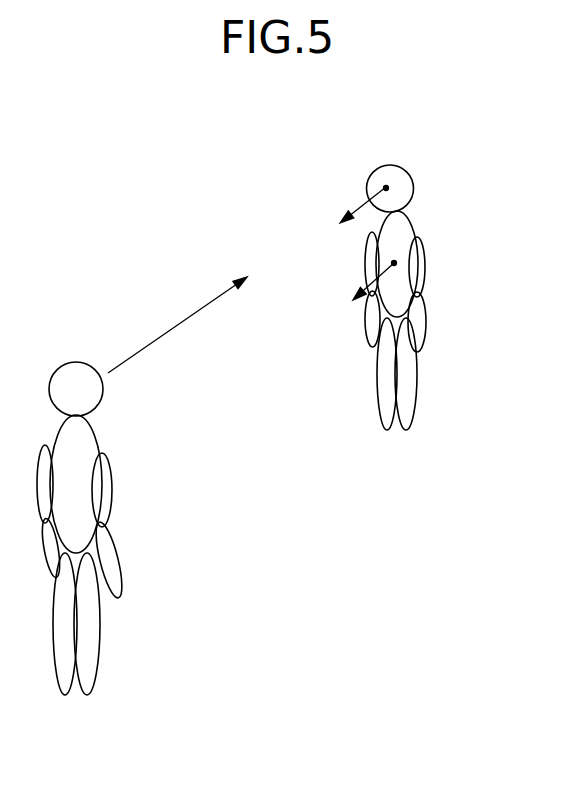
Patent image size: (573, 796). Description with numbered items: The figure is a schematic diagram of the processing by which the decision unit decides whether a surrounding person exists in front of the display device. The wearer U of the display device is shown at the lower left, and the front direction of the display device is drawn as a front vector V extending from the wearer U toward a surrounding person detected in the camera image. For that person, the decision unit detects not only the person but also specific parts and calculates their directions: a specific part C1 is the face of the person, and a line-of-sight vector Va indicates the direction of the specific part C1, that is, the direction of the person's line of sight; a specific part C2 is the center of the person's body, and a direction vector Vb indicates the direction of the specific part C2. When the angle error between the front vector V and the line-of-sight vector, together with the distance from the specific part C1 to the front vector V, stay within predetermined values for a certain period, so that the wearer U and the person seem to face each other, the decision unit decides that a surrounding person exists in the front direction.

The wearer U is at (113, 502).
The specific part C1 is at (386, 187).
The specific part C2 is at (394, 263).
The front vector V is at (165, 333).
The line-of-sight vector Va is at (357, 207).
The direction vector Vb is at (366, 289).